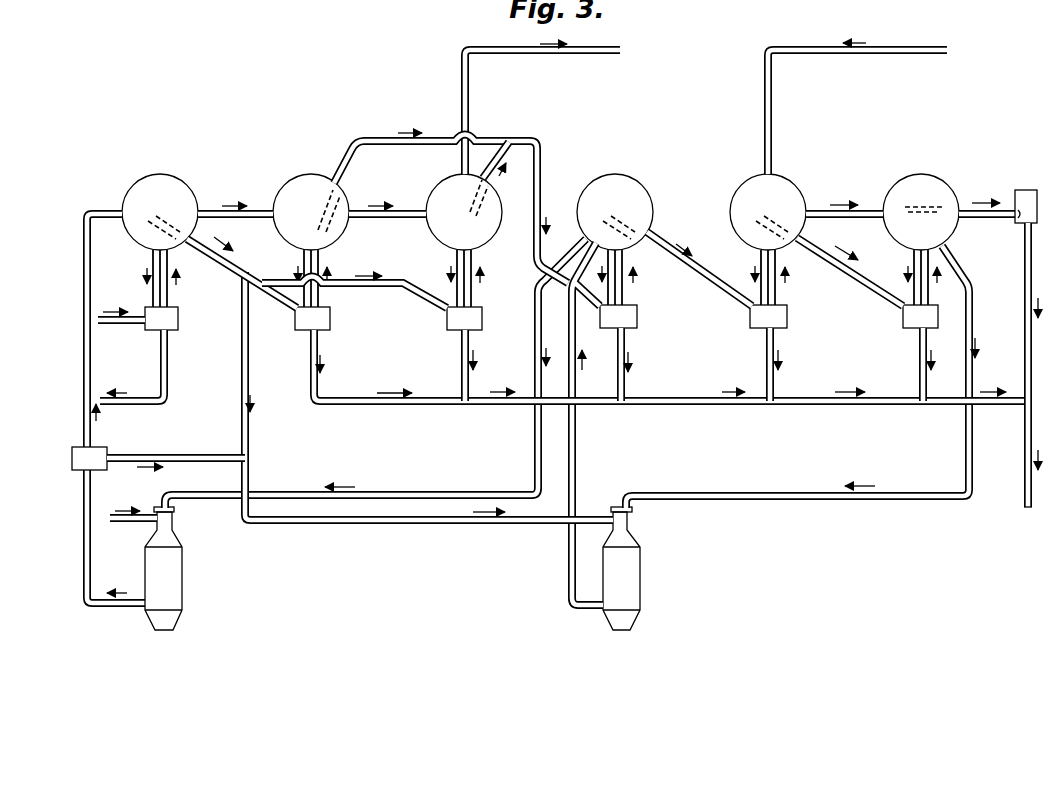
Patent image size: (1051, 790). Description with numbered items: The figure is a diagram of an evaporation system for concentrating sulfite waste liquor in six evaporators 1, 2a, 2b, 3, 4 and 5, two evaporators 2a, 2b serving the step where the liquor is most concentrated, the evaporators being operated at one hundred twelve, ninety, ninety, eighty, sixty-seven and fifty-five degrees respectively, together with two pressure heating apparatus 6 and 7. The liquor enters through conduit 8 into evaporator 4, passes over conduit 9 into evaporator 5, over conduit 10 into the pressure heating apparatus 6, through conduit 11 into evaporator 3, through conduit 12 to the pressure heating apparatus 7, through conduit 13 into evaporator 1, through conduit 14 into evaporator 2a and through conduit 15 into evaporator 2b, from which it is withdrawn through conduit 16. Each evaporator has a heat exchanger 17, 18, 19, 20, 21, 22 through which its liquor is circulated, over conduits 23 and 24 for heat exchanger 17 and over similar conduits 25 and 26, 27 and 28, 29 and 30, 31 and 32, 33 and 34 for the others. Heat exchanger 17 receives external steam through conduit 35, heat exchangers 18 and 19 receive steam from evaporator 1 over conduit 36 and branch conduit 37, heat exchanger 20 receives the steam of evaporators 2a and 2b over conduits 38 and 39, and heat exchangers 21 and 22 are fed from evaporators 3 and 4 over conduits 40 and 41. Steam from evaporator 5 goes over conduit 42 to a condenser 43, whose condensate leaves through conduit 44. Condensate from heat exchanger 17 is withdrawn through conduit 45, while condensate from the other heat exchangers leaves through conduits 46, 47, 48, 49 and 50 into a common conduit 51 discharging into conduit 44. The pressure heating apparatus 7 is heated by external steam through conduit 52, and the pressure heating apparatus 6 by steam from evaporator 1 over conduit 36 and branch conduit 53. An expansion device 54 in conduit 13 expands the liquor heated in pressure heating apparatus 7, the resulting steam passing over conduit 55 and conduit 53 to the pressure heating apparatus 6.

The evaporator 1 is at (157, 175).
The evaporator 2a is at (322, 176).
The evaporator 2b is at (447, 178).
The evaporator 3 is at (621, 176).
The evaporator 4 is at (797, 179).
The evaporator 5 is at (937, 174).
The pressure heating apparatus 6 is at (621, 568).
The pressure heating apparatus 7 is at (163, 568).
The conduit 8 is at (772, 113).
The conduit 9 is at (860, 205).
The conduit 10 is at (962, 262).
The conduit 11 is at (578, 444).
The conduit 12 is at (535, 444).
The conduit 13 is at (85, 407).
The conduit 14 is at (250, 207).
The conduit 15 is at (406, 207).
The conduit 16 is at (469, 92).
The heat exchanger 17 is at (161, 318).
The heat exchanger 18 is at (312, 318).
The heat exchanger 19 is at (464, 318).
The heat exchanger 20 is at (618, 316).
The heat exchanger 21 is at (768, 316).
The heat exchanger 22 is at (920, 316).
The conduit 23 is at (151, 266).
The conduit 24 is at (172, 291).
The conduit 25 is at (303, 254).
The conduit 26 is at (327, 259).
The conduit 27 is at (452, 262).
The conduit 28 is at (478, 262).
The conduit 29 is at (606, 296).
The conduit 30 is at (628, 297).
The conduit 31 is at (762, 277).
The conduit 32 is at (786, 291).
The conduit 33 is at (910, 293).
The conduit 34 is at (930, 297).
The conduit 35 is at (125, 326).
The conduit 36 is at (249, 270).
The branch conduit 37 is at (410, 298).
The conduit 38 is at (488, 141).
The conduit 39 is at (490, 173).
The conduit 40 is at (672, 245).
The conduit 41 is at (863, 272).
The conduit 42 is at (968, 203).
The condenser 43 is at (1026, 190).
The conduit 44 is at (1025, 356).
The conduit 45 is at (165, 374).
The conduit 46 is at (318, 380).
The conduit 47 is at (470, 350).
The conduit 48 is at (625, 342).
The conduit 49 is at (772, 380).
The conduit 50 is at (925, 382).
The common conduit 51 is at (817, 403).
The conduit 52 is at (128, 521).
The branch conduit 53 is at (388, 523).
The expansion device 54 is at (72, 455).
The conduit 55 is at (147, 457).